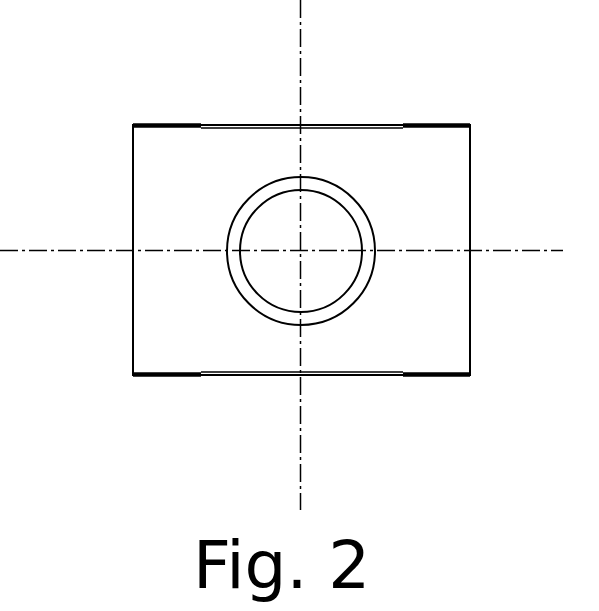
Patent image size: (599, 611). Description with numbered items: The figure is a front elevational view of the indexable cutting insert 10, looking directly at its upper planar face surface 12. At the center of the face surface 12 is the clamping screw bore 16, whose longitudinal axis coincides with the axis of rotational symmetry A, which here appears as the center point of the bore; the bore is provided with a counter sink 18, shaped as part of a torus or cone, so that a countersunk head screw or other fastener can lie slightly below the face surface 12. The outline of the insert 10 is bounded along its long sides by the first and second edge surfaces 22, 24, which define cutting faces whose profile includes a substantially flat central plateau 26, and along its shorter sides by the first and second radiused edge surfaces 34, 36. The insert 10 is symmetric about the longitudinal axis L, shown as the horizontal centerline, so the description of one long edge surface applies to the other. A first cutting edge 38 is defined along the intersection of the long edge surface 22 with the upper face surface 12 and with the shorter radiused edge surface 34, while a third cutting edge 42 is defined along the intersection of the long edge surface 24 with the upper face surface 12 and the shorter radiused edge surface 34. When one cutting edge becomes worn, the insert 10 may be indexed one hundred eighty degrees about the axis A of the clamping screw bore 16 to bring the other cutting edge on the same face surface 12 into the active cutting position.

The cutting insert 10 is at (447, 90).
The first planar face surface 12 is at (214, 157).
The clamping screw bore 16 is at (331, 232).
The counter sink 18 is at (360, 283).
The first edge surface 22 is at (311, 112).
The second edge surface 24 is at (274, 388).
The central plateau 26 is at (343, 124).
The first radiused edge surface 34 is at (104, 317).
The second radiused edge surface 36 is at (494, 221).
The first cutting edge 38 is at (280, 134).
The third cutting edge 42 is at (368, 361).
The axis of rotational symmetry A is at (301, 251).
The longitudinal axis L is at (30, 250).